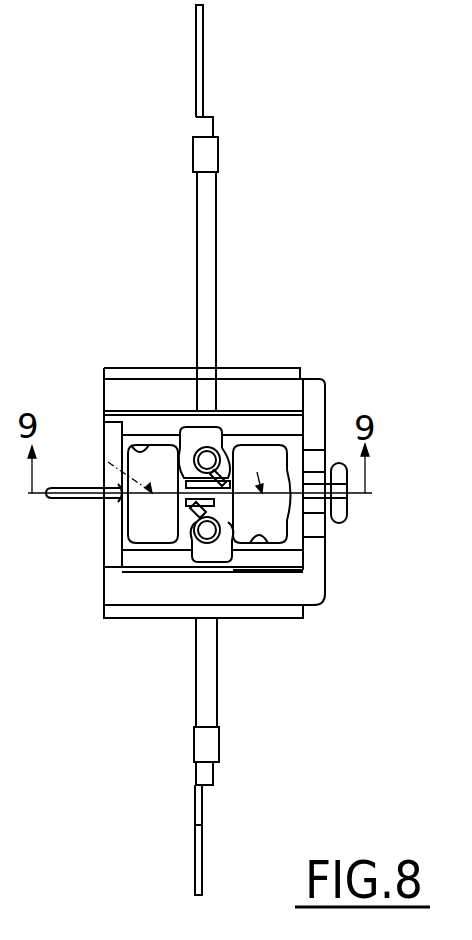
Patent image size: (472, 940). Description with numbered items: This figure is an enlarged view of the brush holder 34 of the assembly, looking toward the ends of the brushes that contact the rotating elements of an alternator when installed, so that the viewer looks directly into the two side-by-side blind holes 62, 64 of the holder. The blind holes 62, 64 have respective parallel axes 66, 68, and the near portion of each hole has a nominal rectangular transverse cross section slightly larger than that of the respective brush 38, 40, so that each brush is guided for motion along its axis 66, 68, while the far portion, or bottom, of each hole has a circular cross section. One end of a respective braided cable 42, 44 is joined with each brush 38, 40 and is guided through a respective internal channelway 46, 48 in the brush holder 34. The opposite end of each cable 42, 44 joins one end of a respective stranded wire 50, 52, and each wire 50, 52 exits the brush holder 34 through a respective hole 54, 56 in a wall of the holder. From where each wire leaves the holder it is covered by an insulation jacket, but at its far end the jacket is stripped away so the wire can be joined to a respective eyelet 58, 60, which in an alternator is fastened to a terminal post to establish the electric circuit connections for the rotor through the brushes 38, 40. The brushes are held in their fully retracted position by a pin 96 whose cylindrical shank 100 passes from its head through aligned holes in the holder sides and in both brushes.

The brush holder 34 is at (302, 372).
The brush 38 is at (133, 510).
The brush 40 is at (272, 455).
The braided cable 42 is at (190, 507).
The braided cable 44 is at (233, 474).
The internal channelway 46 is at (200, 557).
The internal channelway 48 is at (213, 428).
The stranded wire 50 is at (196, 690).
The stranded wire 52 is at (218, 226).
The hole 54 is at (217, 541).
The hole 56 is at (198, 448).
The eyelet 58 is at (195, 845).
The eyelet 60 is at (203, 55).
The blind hole 62 is at (131, 447).
The blind hole 64 is at (270, 548).
The axis 66 is at (108, 462).
The axis 68 is at (308, 553).
The pin 96 is at (343, 523).
The cylindrical shank 100 is at (471, 238).